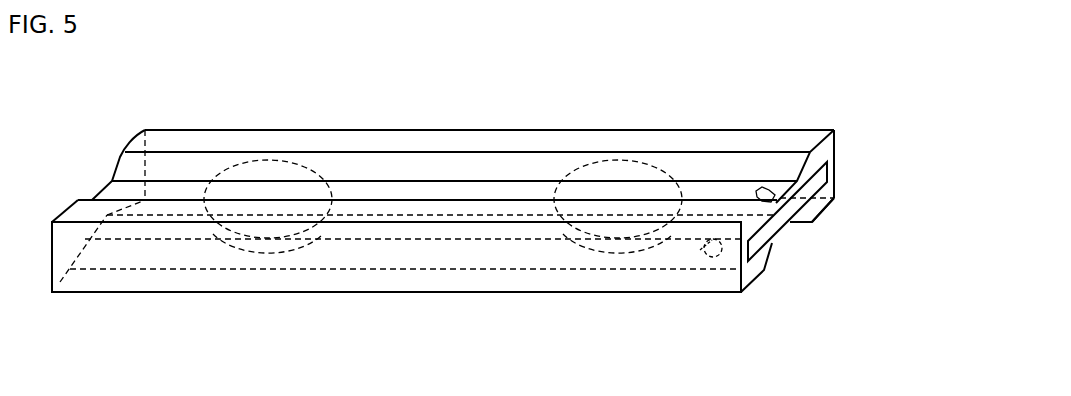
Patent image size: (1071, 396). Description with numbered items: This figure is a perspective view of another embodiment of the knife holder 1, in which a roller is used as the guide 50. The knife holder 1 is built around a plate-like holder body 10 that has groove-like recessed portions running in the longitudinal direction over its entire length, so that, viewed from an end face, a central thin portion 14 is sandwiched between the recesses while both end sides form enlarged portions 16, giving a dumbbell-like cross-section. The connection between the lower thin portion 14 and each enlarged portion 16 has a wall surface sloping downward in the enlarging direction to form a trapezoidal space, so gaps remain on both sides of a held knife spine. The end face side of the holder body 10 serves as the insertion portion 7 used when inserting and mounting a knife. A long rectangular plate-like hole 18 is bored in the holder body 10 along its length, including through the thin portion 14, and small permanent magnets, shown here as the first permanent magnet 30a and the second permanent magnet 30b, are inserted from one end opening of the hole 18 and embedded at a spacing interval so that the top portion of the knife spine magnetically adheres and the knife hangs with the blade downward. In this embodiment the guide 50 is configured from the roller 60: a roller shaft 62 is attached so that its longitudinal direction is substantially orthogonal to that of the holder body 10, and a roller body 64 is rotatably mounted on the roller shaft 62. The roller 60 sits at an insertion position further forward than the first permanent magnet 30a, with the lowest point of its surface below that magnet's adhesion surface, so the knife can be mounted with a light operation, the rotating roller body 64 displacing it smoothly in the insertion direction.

The knife holder 1 is at (355, 98).
The holder body 10 is at (417, 130).
The first permanent magnet 30a is at (632, 160).
The second permanent magnet 30b is at (268, 160).
The insertion portion 7 is at (821, 248).
The thin portion 14 is at (833, 197).
The enlarged portion 16 is at (802, 140).
The hole 18 is at (828, 172).
The guide 50 is at (807, 115).
The roller 60 is at (754, 200).
The roller shaft 62 is at (703, 252).
The roller body 64 is at (712, 268).